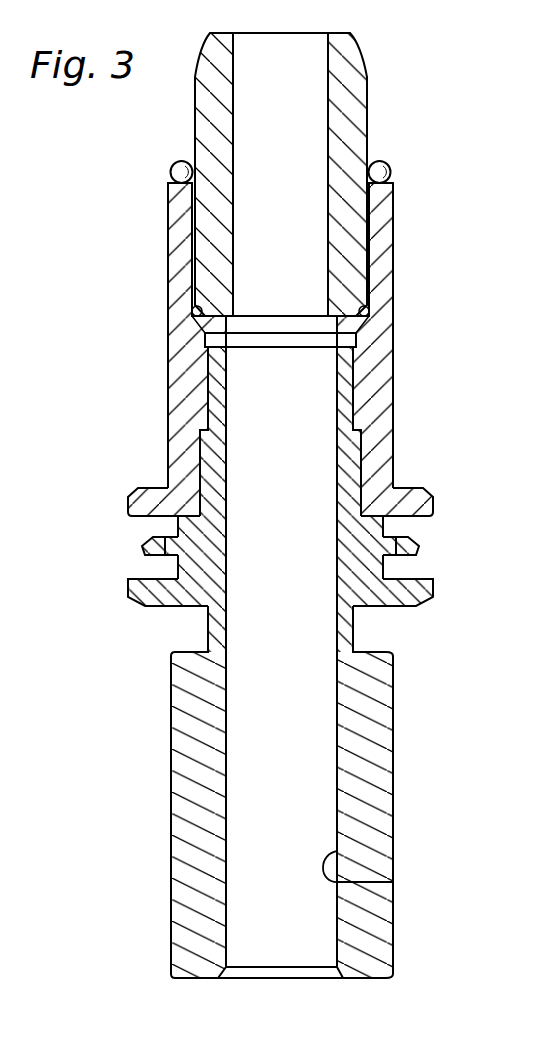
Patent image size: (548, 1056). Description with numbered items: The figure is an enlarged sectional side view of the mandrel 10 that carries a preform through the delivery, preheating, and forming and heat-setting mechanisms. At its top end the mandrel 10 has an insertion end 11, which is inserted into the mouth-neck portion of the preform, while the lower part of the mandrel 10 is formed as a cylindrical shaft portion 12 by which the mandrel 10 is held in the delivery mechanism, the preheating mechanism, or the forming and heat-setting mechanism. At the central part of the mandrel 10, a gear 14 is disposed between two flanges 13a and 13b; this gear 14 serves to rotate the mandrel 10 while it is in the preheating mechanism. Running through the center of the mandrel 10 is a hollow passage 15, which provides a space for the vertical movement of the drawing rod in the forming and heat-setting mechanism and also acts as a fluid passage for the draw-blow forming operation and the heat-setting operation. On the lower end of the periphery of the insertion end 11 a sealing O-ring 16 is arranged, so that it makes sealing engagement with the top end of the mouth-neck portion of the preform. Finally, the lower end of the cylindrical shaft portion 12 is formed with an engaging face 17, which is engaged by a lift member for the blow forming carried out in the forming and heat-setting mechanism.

The mandrel 10 is at (420, 335).
The insertion end 11 is at (367, 80).
The cylindrical shaft portion 12 is at (393, 795).
The flange 13a is at (430, 493).
The flange 13b is at (428, 606).
The gear 14 is at (422, 546).
The hollow passage 15 is at (393, 882).
The sealing O-ring 16 is at (390, 171).
The engaging face 17 is at (368, 980).